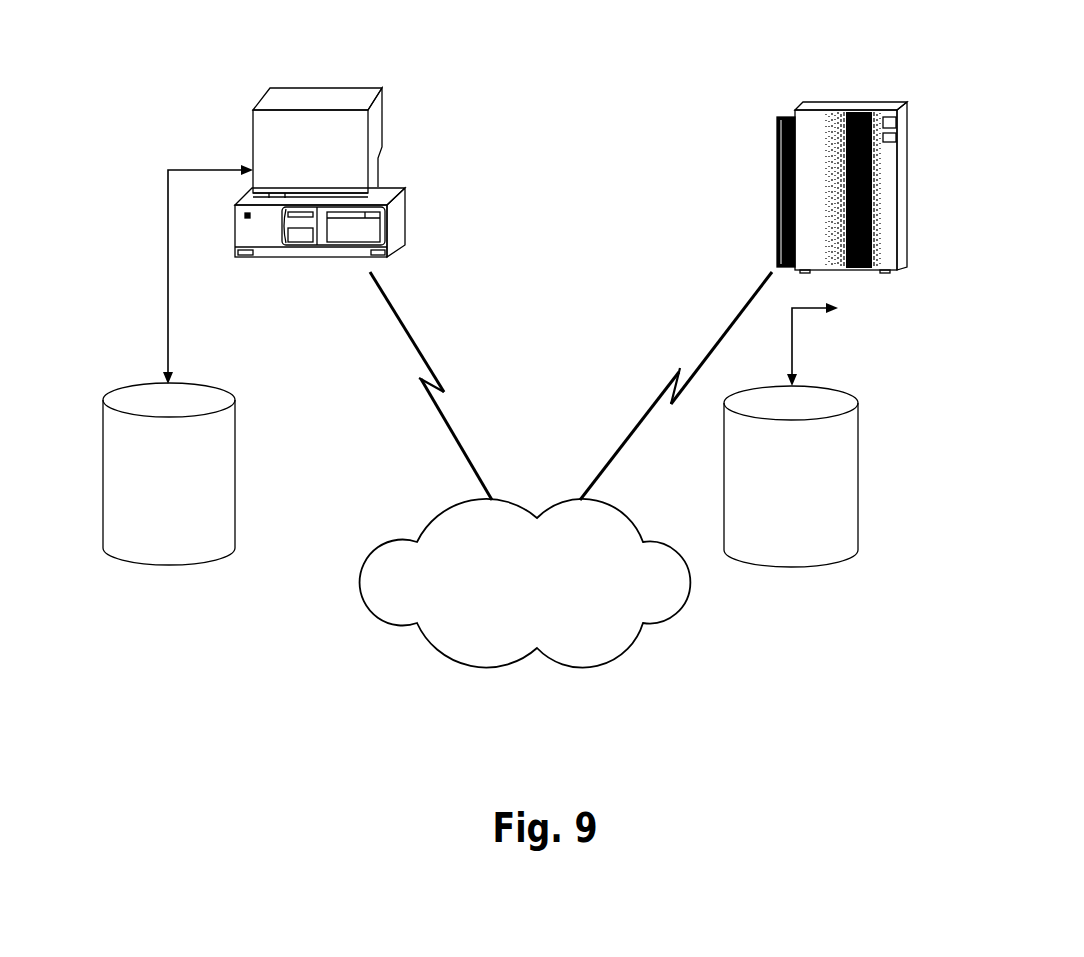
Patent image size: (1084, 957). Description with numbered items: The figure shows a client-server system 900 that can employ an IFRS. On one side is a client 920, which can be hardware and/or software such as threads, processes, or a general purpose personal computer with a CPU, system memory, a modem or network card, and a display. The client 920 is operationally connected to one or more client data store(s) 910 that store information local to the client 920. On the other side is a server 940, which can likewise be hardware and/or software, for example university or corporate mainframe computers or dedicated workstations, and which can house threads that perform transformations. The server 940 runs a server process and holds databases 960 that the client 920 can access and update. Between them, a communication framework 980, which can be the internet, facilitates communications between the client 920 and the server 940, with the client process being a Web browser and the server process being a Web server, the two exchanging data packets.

The client-server system 900 is at (592, 19).
The client data store(s) 910 is at (168, 565).
The client(s) 920 is at (405, 228).
The server(s) 940 is at (833, 102).
The databases 960 is at (792, 567).
The communication framework 980 is at (688, 590).